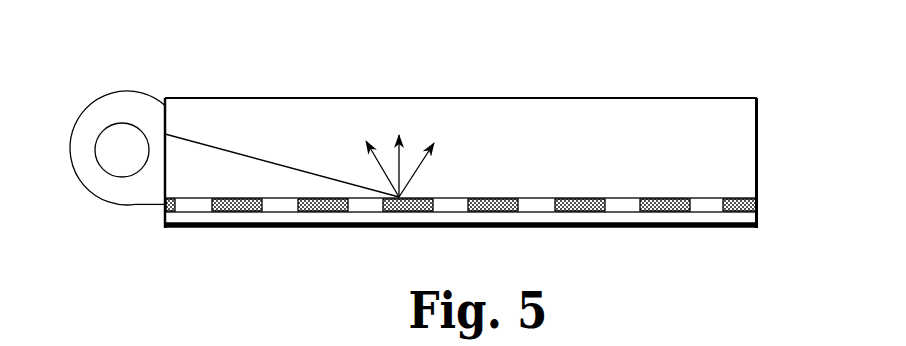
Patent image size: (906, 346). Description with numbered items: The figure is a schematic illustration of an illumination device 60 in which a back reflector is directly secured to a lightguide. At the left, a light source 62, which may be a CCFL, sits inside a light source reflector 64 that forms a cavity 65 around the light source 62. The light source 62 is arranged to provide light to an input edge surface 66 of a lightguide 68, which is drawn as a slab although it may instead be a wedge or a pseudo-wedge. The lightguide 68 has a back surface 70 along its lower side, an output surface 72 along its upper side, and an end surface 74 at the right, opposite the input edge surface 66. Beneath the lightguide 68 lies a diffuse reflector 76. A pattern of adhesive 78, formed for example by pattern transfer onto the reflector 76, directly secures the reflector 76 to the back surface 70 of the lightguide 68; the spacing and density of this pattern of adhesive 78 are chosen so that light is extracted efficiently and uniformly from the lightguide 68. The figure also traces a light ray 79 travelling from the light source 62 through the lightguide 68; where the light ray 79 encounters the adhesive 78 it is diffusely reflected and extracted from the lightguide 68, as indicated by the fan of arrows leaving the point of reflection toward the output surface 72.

The illumination device 60 is at (452, 148).
The light source 62 is at (118, 122).
The light source reflector 64 is at (122, 161).
The cavity 65 is at (105, 187).
The input edge surface 66 is at (165, 170).
The lightguide 68 is at (505, 154).
The back surface 70 is at (620, 200).
The output surface 72 is at (525, 97).
The end surface 74 is at (757, 160).
The diffuse reflector 76 is at (298, 227).
The pattern of adhesive 78 is at (505, 236).
The light ray 79 is at (232, 148).